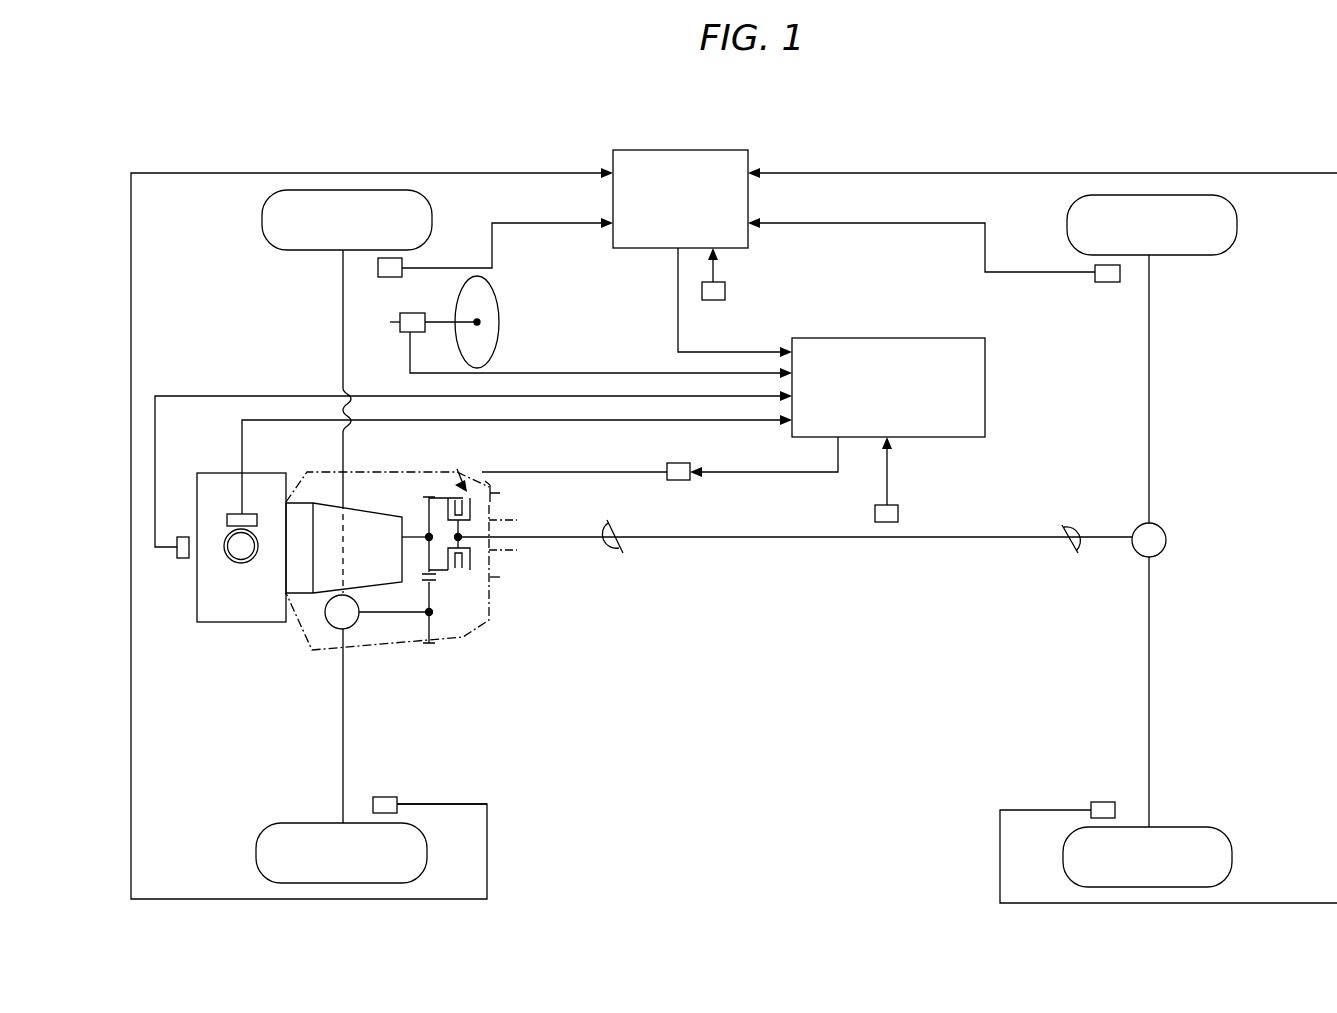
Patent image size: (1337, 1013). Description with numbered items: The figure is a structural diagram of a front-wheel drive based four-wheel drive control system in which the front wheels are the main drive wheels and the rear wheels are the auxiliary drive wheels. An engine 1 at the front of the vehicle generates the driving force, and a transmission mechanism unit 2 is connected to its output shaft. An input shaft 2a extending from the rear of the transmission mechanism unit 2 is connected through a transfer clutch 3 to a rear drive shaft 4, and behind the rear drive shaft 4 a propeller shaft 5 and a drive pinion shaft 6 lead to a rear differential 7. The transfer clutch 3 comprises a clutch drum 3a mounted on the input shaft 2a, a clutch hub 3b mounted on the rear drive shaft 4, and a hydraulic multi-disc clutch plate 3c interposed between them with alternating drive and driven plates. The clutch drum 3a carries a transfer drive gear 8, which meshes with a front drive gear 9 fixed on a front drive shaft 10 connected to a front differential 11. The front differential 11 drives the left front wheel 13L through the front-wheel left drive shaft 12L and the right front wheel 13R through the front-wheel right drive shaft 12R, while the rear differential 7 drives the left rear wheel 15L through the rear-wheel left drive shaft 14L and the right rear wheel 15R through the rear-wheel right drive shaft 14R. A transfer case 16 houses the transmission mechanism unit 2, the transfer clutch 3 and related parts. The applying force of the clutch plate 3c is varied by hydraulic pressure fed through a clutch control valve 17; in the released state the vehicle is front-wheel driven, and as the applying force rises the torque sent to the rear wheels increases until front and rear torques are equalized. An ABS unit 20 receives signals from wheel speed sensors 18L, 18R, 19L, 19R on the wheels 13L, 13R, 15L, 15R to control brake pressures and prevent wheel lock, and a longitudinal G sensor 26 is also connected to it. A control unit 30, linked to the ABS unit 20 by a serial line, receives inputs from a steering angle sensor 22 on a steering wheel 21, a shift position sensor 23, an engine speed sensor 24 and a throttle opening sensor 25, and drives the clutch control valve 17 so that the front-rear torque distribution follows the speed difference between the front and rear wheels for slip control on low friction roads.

The engine 1 is at (213, 465).
The transmission mechanism unit 2 is at (330, 496).
The input shaft 2a is at (418, 533).
The transfer clutch 3 is at (460, 597).
The clutch drum 3a is at (457, 500).
The clutch hub 3b is at (470, 512).
The clutch plate 3c is at (470, 558).
The rear drive shaft 4 is at (515, 537).
The propeller shaft 5 is at (768, 537).
The drive pinion shaft 6 is at (1118, 537).
The rear differential 7 is at (1167, 540).
The transfer drive gear 8 is at (428, 496).
The front drive gear 9 is at (432, 645).
The front drive shaft 10 is at (413, 616).
The front differential 11 is at (324, 617).
The front-wheel right drive shaft 12R is at (343, 342).
The front-wheel left drive shaft 12L is at (342, 744).
The right front wheel 13R is at (262, 221).
The left front wheel 13L is at (255, 853).
The rear-wheel right drive shaft 14R is at (1152, 393).
The rear-wheel left drive shaft 14L is at (1151, 683).
The right rear wheel 15R is at (1240, 227).
The left rear wheel 15L is at (1235, 860).
The transfer case 16 is at (323, 654).
The clutch control valve 17 is at (672, 480).
The wheel speed sensor 18R is at (388, 278).
The wheel speed sensor 18L is at (386, 797).
The wheel speed sensor 19R is at (1104, 282).
The wheel speed sensor 19L is at (1098, 802).
The ABS unit 20 is at (682, 150).
The steering wheel 21 is at (500, 327).
The steering angle sensor 22 is at (404, 332).
The shift position sensor 23 is at (900, 514).
The engine speed sensor 24 is at (180, 560).
The throttle opening sensor 25 is at (257, 512).
The longitudinal G sensor 26 is at (727, 292).
The control unit 30 is at (888, 338).